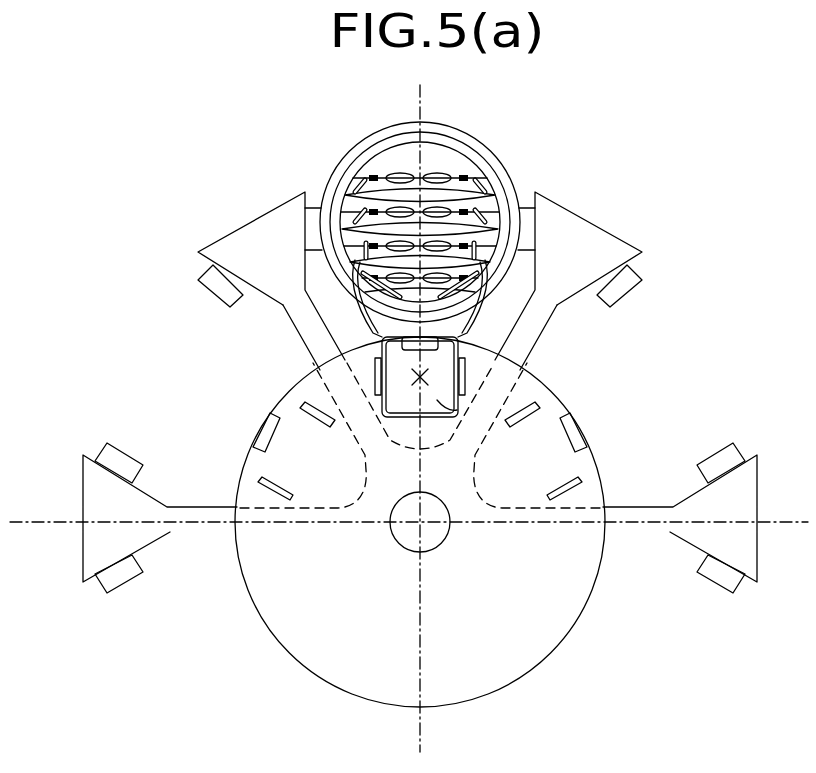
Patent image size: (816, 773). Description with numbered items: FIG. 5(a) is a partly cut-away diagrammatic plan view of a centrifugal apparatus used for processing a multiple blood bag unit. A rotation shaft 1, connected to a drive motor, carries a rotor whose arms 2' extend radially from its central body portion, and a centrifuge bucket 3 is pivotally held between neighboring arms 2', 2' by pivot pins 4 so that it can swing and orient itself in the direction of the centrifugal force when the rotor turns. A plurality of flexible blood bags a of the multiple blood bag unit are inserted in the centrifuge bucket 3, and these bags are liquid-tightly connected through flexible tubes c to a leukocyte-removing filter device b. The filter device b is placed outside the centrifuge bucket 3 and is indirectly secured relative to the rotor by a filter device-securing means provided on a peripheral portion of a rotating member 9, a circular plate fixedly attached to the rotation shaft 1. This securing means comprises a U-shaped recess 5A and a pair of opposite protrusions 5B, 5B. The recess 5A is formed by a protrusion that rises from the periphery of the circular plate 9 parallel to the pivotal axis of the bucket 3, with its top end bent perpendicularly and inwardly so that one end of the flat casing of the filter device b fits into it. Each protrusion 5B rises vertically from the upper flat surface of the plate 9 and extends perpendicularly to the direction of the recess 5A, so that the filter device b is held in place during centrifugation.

The rotation shaft 1 is at (437, 535).
The rotating member (circular plate) 9 is at (578, 592).
The centrifuge bucket 3 is at (417, 213).
The flexible blood bag a is at (437, 173).
The flexible tube c is at (355, 183).
The centrifuge bucket-holding extension (arm) 2' is at (620, 281).
The pivot pin 4 is at (628, 287).
The U-shaped recess 5A is at (407, 355).
The opposite protrusion 5B is at (376, 370).
The leukocyte-removing filter device b is at (440, 400).